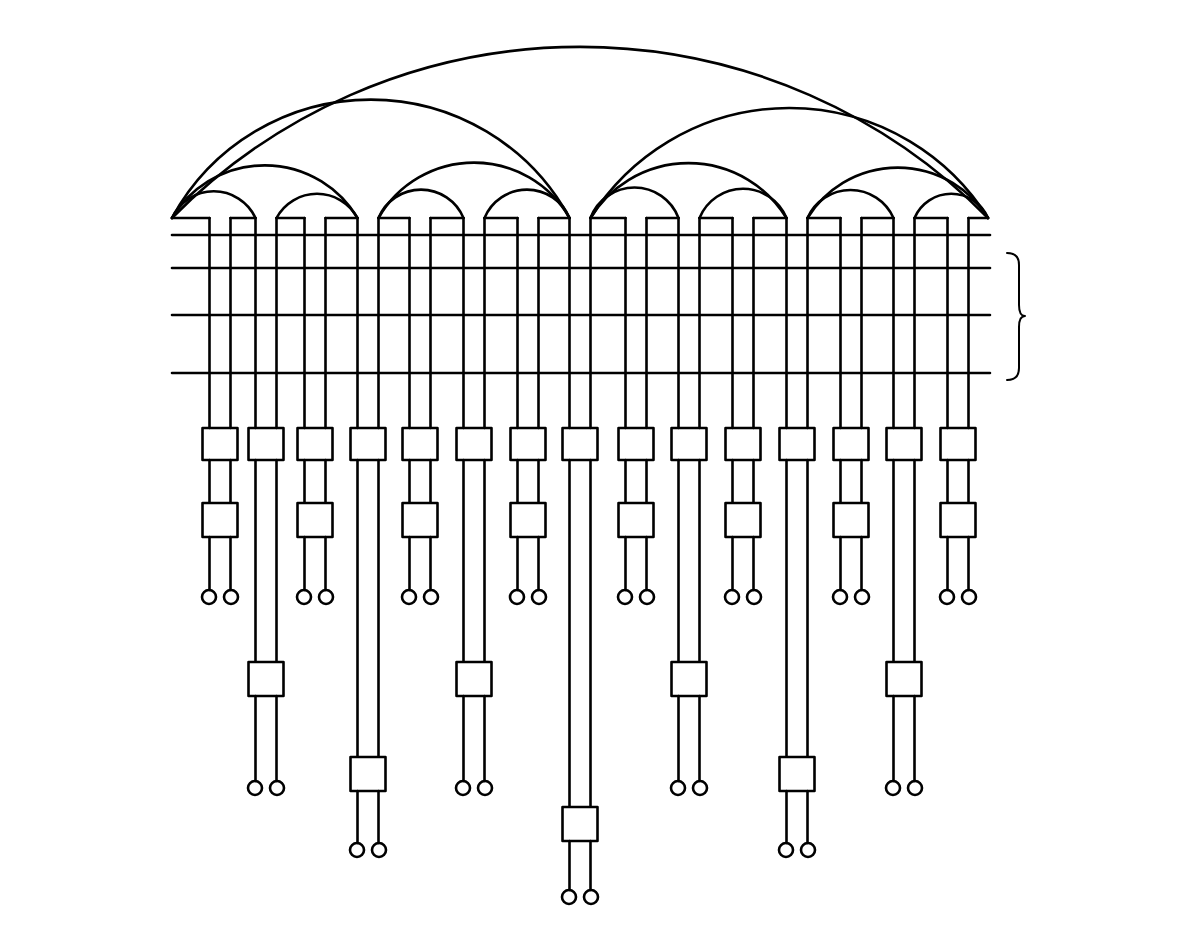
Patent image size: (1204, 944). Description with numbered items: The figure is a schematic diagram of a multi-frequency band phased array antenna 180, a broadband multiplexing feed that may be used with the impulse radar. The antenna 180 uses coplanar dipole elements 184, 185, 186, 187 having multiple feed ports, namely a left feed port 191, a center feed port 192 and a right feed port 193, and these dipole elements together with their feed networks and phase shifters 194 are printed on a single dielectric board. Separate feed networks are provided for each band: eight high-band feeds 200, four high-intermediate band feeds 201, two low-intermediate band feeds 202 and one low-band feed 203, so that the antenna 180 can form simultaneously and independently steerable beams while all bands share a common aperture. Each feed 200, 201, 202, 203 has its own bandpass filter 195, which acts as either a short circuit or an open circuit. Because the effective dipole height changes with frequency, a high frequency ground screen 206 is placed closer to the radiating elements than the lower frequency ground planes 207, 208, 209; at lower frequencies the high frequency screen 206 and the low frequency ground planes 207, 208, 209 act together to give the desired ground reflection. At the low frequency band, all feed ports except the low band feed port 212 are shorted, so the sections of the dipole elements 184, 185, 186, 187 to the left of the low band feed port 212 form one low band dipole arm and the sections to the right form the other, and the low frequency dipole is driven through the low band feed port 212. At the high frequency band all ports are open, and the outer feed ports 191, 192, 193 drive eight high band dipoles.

The multi-frequency band phased array antenna 180 is at (278, 843).
The dipole element 184 is at (272, 128).
The dipole element 185 is at (526, 150).
The dipole element 186 is at (656, 139).
The dipole element 187 is at (927, 134).
The left feed port 191 is at (199, 194).
The center feed port 192 is at (265, 215).
The right feed port 193 is at (312, 224).
The phase shifter 194 is at (307, 522).
The bandpass filter 195 is at (194, 435).
The high-band feed 200 is at (231, 604).
The high-intermediate band feed 201 is at (260, 794).
The low-intermediate band feed 202 is at (386, 851).
The low-band feed 203 is at (564, 892).
The high frequency ground screen 206 is at (967, 232).
The low frequency ground plane 207 is at (971, 268).
The low frequency ground plane 208 is at (972, 315).
The low frequency ground plane 209 is at (972, 373).
The low band feed port 212 is at (579, 206).